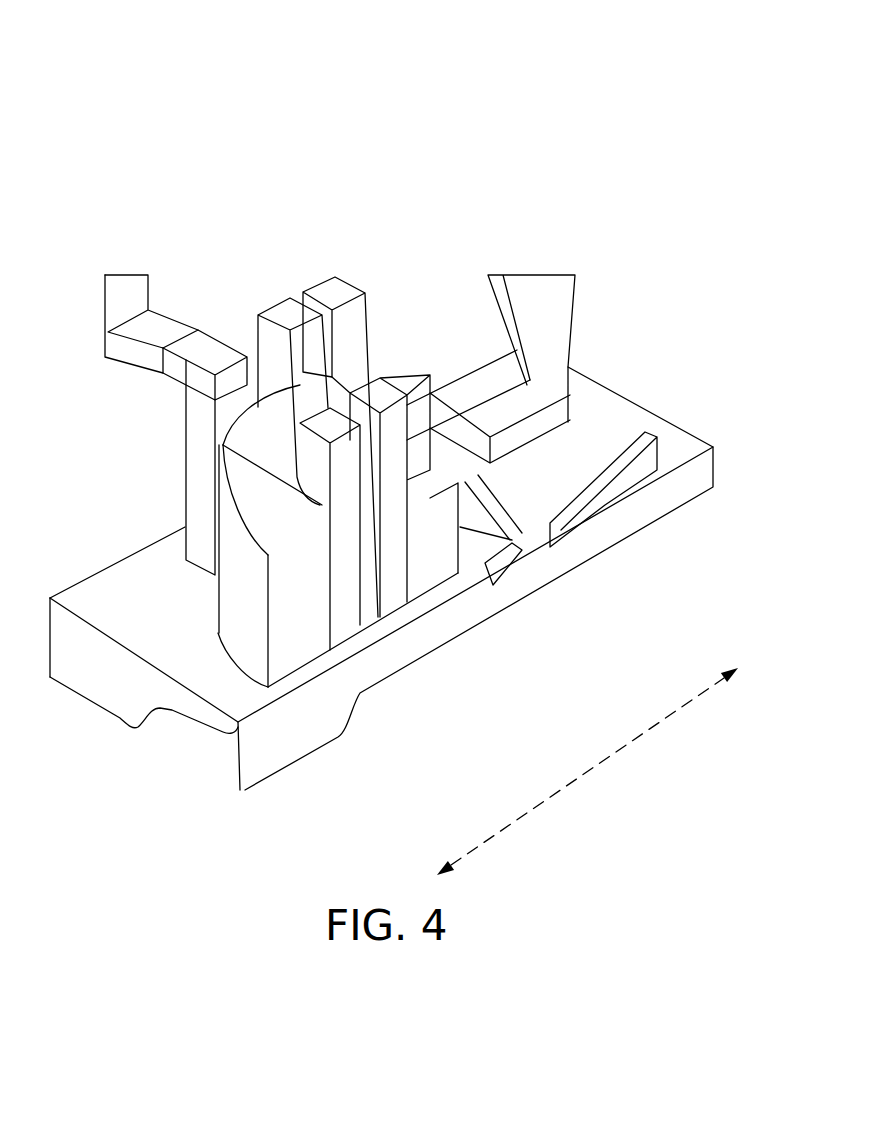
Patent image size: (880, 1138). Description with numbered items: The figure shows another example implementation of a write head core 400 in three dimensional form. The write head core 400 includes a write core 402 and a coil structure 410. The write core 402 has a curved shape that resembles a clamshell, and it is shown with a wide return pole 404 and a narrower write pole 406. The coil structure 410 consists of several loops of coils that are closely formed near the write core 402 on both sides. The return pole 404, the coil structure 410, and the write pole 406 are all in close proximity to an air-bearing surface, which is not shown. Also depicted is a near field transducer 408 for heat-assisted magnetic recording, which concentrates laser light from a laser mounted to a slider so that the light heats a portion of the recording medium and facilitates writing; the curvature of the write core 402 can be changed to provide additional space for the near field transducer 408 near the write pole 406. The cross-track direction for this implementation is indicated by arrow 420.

The write head core 400 is at (157, 82).
The write core 402 is at (236, 571).
The return pole 404 is at (279, 650).
The write pole 406 is at (513, 565).
The near field transducer 408 is at (660, 427).
The coil structure 410 is at (266, 308).
The cross-track direction 420 is at (498, 830).